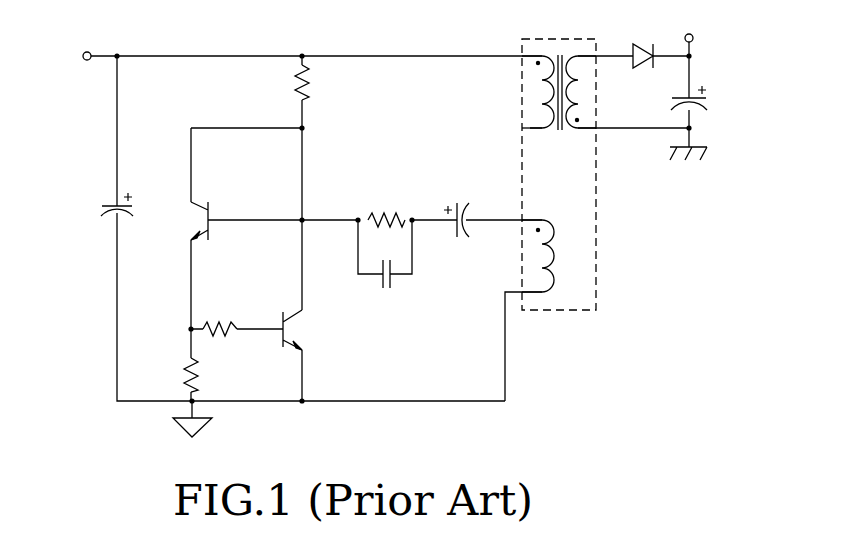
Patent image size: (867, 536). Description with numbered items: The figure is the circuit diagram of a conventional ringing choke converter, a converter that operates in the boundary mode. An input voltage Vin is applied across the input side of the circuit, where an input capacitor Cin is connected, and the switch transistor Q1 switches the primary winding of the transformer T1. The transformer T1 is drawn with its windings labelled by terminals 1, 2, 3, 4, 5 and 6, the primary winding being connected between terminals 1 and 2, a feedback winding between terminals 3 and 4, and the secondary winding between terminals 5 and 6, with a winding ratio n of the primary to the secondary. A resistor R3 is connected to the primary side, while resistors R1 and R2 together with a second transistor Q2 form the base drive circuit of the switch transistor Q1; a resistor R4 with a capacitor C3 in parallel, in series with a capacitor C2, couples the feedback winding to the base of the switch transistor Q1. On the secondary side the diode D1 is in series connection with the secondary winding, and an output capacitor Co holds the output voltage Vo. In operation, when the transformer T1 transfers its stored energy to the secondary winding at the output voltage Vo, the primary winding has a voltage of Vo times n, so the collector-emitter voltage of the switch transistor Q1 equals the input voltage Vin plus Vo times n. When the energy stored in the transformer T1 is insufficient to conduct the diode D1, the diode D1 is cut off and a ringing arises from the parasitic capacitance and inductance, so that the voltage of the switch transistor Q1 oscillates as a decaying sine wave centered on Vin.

The input voltage Vin is at (87, 43).
The input capacitor Cin is at (127, 219).
The resistor R3 is at (318, 82).
The switch transistor Q1 is at (216, 216).
The resistor R2 is at (220, 315).
The transistor Q2 is at (309, 330).
The resistor R1 is at (206, 375).
The resistor R4 is at (386, 205).
The capacitor C3 is at (385, 266).
The capacitor C2 is at (461, 206).
The transformer T1 is at (559, 155).
The transformer primary terminal 1 is at (522, 44).
The transformer primary terminal 2 is at (522, 117).
The transformer feedback winding terminal 3 is at (523, 209).
The transformer feedback winding terminal 4 is at (523, 282).
The transformer secondary terminal 5 is at (596, 44).
The transformer secondary terminal 6 is at (597, 117).
The diode D1 is at (642, 42).
The output voltage Vo is at (690, 33).
The output capacitor Co is at (703, 92).